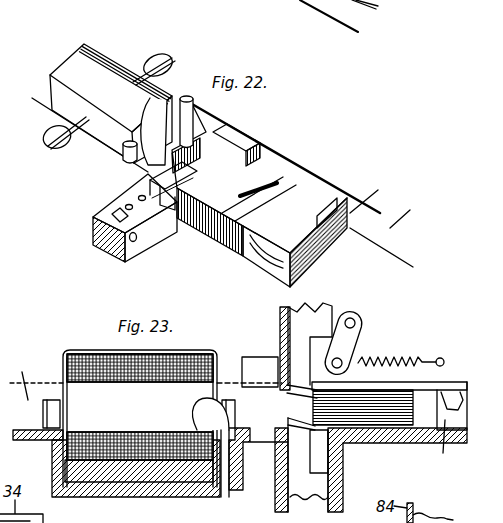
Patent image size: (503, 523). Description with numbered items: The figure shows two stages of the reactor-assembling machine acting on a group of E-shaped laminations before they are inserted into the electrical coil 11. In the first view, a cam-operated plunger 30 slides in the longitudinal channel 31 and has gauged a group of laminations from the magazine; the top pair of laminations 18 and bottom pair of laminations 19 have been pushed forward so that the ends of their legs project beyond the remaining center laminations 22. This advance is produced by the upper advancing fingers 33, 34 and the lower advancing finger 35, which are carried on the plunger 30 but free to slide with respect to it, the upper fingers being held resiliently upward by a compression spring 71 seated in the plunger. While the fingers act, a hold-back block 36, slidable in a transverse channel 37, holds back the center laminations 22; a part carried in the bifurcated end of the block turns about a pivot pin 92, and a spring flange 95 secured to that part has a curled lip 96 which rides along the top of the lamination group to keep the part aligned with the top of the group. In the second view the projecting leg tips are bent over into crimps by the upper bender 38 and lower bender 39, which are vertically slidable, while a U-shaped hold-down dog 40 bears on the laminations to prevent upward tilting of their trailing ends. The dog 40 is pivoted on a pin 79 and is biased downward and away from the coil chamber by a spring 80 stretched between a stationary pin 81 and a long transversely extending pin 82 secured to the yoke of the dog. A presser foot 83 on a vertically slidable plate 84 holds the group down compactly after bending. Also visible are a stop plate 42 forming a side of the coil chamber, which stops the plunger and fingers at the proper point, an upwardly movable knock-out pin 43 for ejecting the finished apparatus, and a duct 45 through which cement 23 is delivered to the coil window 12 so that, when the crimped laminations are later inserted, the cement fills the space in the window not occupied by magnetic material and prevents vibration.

In FIG. 22, the electrical coil 11 is at (102, 72).
In FIG. 23, the electrical coil 11 is at (80, 354).
In FIG. 22, the coil window 12 is at (170, 100).
In FIG. 23, the coil window 12 is at (64, 395).
In FIG. 22, the top pair of laminations 18 is at (225, 135).
In FIG. 22, the bottom pair of laminations 19 is at (213, 240).
In FIG. 22, the center laminations 22 is at (232, 250).
In FIG. 22, the cement 23 is at (150, 125).
In FIG. 23, the cement 23 is at (192, 414).
In FIG. 22, the plunger 30 is at (373, 194).
In FIG. 23, the plunger 30 is at (435, 445).
In FIG. 22, the longitudinal channel 31 is at (405, 210).
In FIG. 23, the longitudinal channel 31 is at (20, 378).
In FIG. 22, the upper advancing finger 33 is at (318, 178).
In FIG. 22, the upper advancing finger 34 is at (266, 227).
In FIG. 23, the upper advancing finger 34 is at (439, 381).
In FIG. 22, the lower advancing finger 35 is at (320, 250).
In FIG. 23, the lower advancing finger 35 is at (400, 428).
In FIG. 22, the hold-back block 36 is at (94, 246).
In FIG. 22, the transverse channel 37 is at (95, 218).
In FIG. 23, the upper bender 38 is at (300, 352).
In FIG. 23, the lower bender 39 is at (295, 452).
In FIG. 23, the hold-down dog 40 is at (352, 345).
In FIG. 22, the stop plate 42 is at (102, 133).
In FIG. 23, the stop plate 42 is at (66, 352).
In FIG. 22, the knock-out pin 43 is at (191, 118).
In FIG. 23, the knock-out pin 43 is at (43, 418).
In FIG. 23, the duct 45 is at (233, 483).
In FIG. 23, the compression spring 71 is at (447, 403).
In FIG. 23, the pin 79 is at (356, 319).
In FIG. 23, the spring 80 is at (407, 362).
In FIG. 23, the stationary pin 81 is at (440, 358).
In FIG. 23, the transversely extending pin 82 is at (331, 364).
In FIG. 23, the presser foot 83 is at (245, 360).
In FIG. 23, the vertically slidable plate 84 is at (281, 310).
In FIG. 22, the pivot pin 92 is at (136, 243).
In FIG. 22, the spring flange 95 is at (148, 184).
In FIG. 22, the curled lip 96 is at (190, 198).